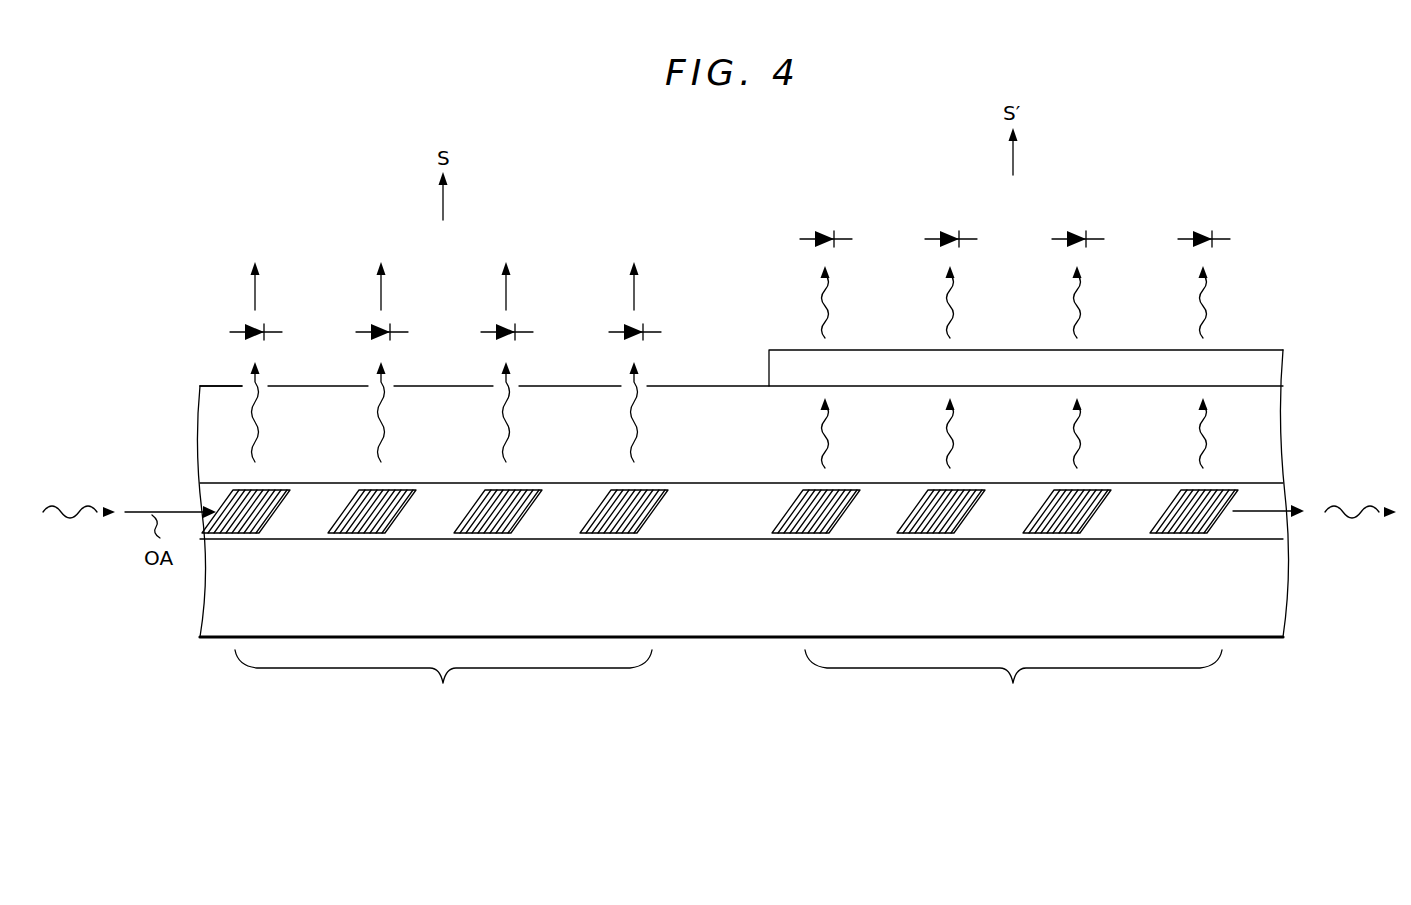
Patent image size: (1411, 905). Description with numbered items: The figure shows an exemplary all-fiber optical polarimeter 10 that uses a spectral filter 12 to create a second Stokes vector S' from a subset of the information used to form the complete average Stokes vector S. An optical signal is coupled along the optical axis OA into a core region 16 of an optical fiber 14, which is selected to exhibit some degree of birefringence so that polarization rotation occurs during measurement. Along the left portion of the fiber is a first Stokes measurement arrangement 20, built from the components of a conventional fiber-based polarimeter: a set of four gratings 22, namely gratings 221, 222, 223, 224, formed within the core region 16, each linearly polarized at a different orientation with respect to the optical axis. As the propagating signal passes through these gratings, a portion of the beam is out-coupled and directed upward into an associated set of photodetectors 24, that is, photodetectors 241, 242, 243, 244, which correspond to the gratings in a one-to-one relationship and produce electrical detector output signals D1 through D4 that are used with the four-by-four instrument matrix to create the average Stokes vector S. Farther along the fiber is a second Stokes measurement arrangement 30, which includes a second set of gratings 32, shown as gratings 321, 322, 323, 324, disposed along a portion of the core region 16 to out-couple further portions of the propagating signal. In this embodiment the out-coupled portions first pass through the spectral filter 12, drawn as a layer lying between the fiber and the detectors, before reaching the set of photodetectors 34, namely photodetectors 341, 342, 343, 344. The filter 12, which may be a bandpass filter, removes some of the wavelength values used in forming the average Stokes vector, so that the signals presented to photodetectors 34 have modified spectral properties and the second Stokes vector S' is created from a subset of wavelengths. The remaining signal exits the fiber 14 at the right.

The optical polarimeter 10 is at (1228, 114).
The spectral filter 12 is at (1268, 372).
The optical fiber 14 is at (1268, 612).
The core region 16 is at (1266, 498).
The first Stokes measurement arrangement 20 is at (443, 684).
The gratings 22 is at (448, 537).
The first grating 221 is at (262, 522).
The second grating 222 is at (388, 522).
The third grating 223 is at (514, 522).
The fourth grating 224 is at (640, 522).
The photodetectors 24 is at (422, 289).
The first photodetector 241 is at (243, 331).
The second photodetector 242 is at (369, 331).
The third photodetector 243 is at (494, 331).
The fourth photodetector 244 is at (622, 331).
The second Stokes measurement arrangement 30 is at (1013, 684).
The gratings 32 is at (1018, 537).
The first grating 321 is at (832, 522).
The second grating 322 is at (957, 522).
The third grating 323 is at (1083, 522).
The fourth grating 324 is at (1210, 522).
The photodetectors 34 is at (988, 223).
The first photodetector 341 is at (813, 238).
The second photodetector 342 is at (938, 238).
The third photodetector 343 is at (1065, 238).
The fourth photodetector 344 is at (1191, 238).